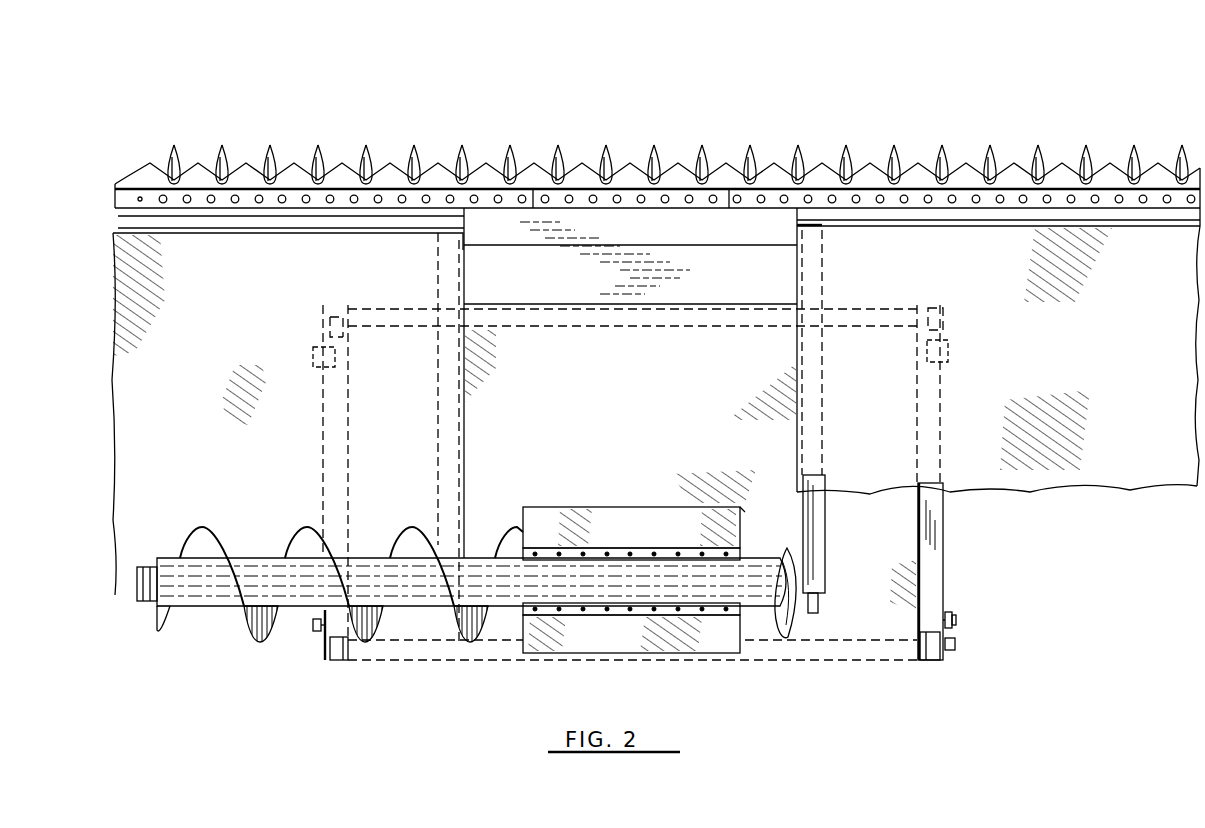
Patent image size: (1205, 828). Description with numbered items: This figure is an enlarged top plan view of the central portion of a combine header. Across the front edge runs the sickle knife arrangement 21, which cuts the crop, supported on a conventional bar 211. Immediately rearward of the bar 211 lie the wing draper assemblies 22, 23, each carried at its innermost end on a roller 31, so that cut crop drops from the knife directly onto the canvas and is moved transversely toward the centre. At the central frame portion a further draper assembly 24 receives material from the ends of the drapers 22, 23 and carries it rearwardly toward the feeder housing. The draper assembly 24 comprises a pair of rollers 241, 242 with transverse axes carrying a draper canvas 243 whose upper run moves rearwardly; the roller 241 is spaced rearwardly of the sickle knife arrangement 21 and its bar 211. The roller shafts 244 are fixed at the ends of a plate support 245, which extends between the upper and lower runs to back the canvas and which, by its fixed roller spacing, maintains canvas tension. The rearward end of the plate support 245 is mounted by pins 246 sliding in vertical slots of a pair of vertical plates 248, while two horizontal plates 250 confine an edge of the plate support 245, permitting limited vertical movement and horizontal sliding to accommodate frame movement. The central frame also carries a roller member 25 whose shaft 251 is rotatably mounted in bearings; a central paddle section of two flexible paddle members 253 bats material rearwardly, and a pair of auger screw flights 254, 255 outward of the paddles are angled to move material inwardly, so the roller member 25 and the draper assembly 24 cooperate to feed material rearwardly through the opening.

The sickle knife arrangement 21 is at (509, 126).
The bar 211 is at (385, 200).
The draper assembly 22 is at (277, 250).
The draper assembly 23 is at (1014, 241).
The draper assembly 24 is at (488, 453).
The roller 241 is at (343, 318).
The roller 242 is at (340, 661).
The draper canvas 243 is at (455, 665).
The shafts 244 is at (328, 325).
The plate support 245 is at (323, 425).
The pins 246 is at (956, 620).
The vertical plates 248 is at (313, 631).
The horizontal plates 250 is at (313, 357).
The roller member 25 is at (247, 650).
The shaft 251 is at (208, 598).
The flexible paddle members 253 is at (615, 522).
The auger screw flight 254 is at (302, 540).
The auger screw flight 255 is at (757, 625).
The roller 31 is at (438, 257).